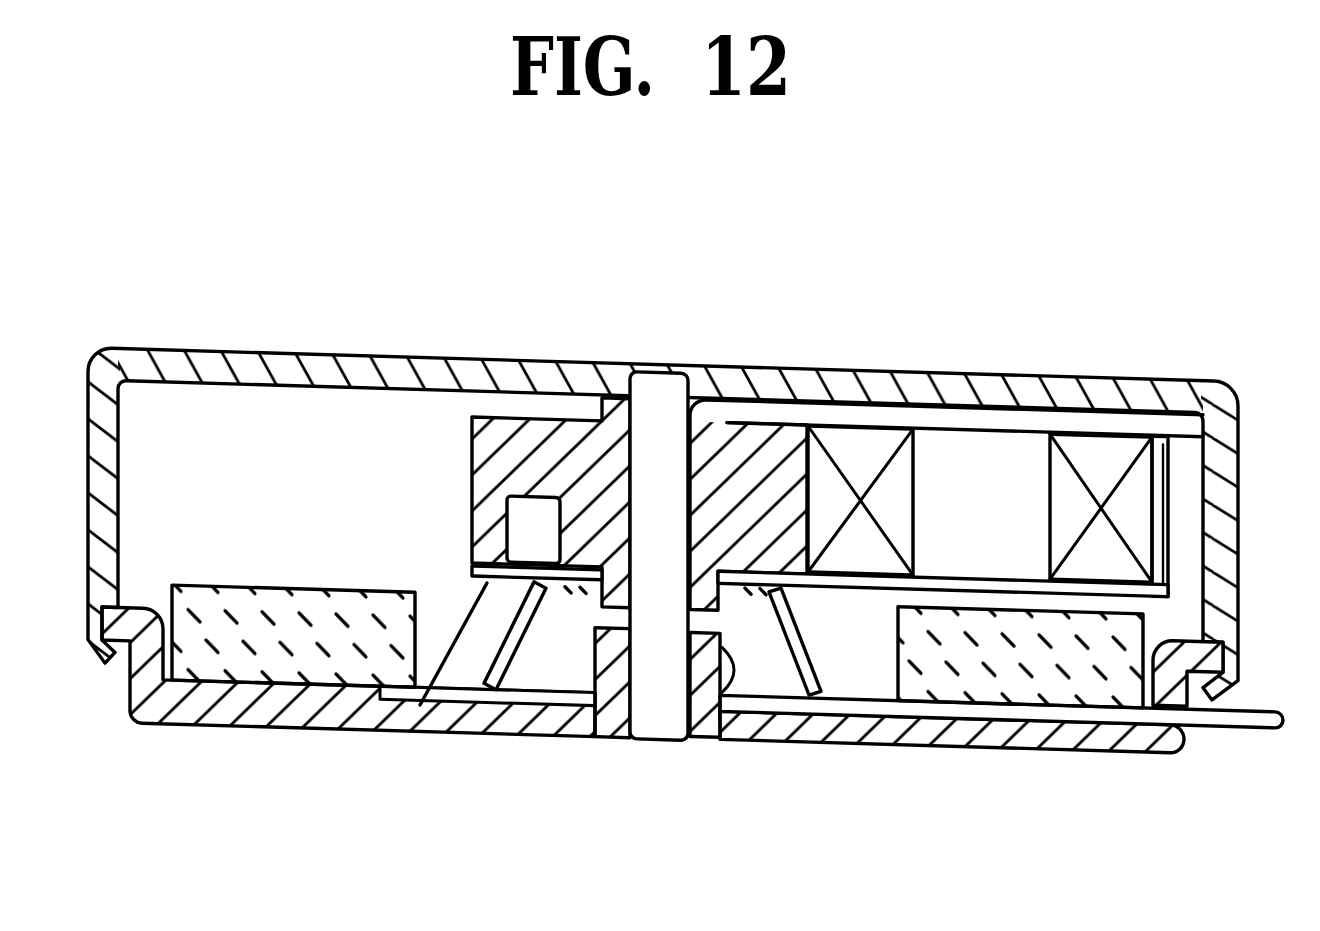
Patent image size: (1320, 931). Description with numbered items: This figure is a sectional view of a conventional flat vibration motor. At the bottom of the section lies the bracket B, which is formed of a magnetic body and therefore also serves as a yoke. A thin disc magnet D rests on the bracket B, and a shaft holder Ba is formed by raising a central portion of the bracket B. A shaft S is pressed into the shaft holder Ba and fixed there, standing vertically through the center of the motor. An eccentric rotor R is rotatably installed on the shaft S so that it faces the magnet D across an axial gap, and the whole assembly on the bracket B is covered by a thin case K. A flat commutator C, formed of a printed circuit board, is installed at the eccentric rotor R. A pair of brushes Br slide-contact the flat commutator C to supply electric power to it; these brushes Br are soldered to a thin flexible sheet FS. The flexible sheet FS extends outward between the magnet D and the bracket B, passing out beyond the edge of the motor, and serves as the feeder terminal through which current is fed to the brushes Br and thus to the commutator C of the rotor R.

The case K is at (285, 370).
The shaft S is at (663, 403).
The eccentric rotor R is at (993, 478).
The disc magnet D is at (287, 642).
The flat commutator C is at (420, 705).
The brushes Br is at (527, 630).
The shaft holder Ba is at (710, 700).
The bracket B is at (926, 735).
The flexible sheet FS is at (1255, 720).